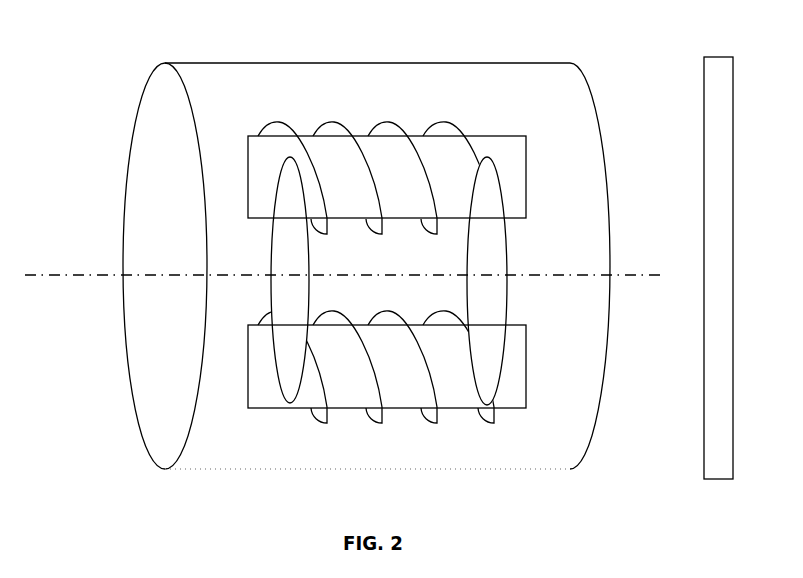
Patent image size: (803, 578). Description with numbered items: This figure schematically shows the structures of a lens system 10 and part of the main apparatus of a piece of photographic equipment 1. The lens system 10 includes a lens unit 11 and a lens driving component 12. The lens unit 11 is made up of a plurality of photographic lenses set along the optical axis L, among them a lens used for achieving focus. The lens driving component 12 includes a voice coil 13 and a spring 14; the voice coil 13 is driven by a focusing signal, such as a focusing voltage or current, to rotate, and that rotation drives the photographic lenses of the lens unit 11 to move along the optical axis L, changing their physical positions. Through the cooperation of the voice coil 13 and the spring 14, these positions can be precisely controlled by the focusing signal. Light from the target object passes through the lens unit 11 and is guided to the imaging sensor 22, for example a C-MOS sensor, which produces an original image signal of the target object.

The imaging device 1 is at (52, 34).
The lens system 10 is at (214, 62).
The lens unit 11 is at (472, 277).
The lens driving component 12 is at (274, 110).
The voice coil 13 is at (252, 148).
The spring 14 is at (334, 124).
The imaging sensor 22 is at (702, 103).